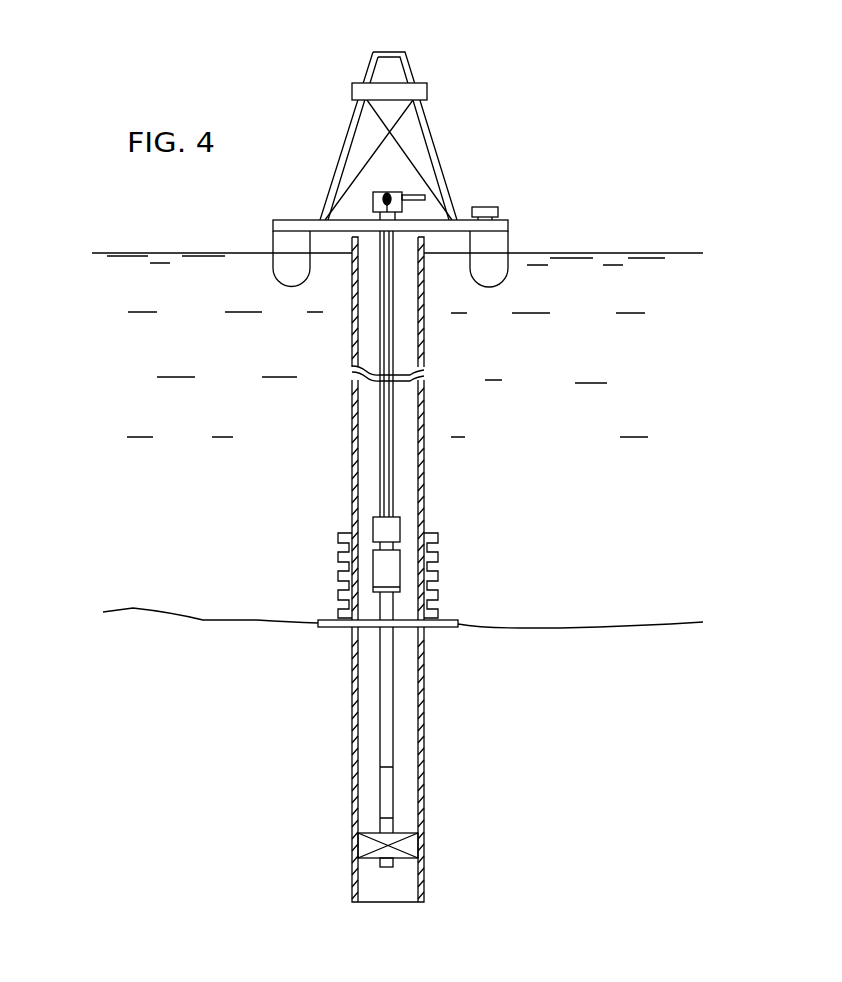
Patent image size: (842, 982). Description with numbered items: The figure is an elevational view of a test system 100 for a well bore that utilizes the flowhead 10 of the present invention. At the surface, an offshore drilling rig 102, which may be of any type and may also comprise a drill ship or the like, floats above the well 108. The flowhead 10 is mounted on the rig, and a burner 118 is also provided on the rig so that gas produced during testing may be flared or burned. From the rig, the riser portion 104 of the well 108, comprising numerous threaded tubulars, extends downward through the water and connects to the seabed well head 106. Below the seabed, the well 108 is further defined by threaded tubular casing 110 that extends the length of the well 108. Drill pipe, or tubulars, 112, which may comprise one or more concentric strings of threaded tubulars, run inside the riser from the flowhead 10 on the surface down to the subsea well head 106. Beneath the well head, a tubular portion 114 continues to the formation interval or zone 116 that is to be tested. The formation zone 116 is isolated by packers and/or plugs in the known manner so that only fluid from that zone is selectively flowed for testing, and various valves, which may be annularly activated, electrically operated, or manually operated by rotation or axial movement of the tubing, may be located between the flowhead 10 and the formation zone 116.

The test system 100 is at (740, 173).
The offshore drilling rig 102 is at (428, 123).
The flowhead 10 is at (392, 192).
The burner 118 is at (492, 207).
The riser portion 104 is at (423, 412).
The seabed well head 106 is at (437, 588).
The well 108 is at (407, 720).
The threaded tubular casing 110 is at (423, 767).
The drill pipe 112 is at (388, 440).
The tubular portion 114 is at (387, 685).
The formation zone 116 is at (423, 845).